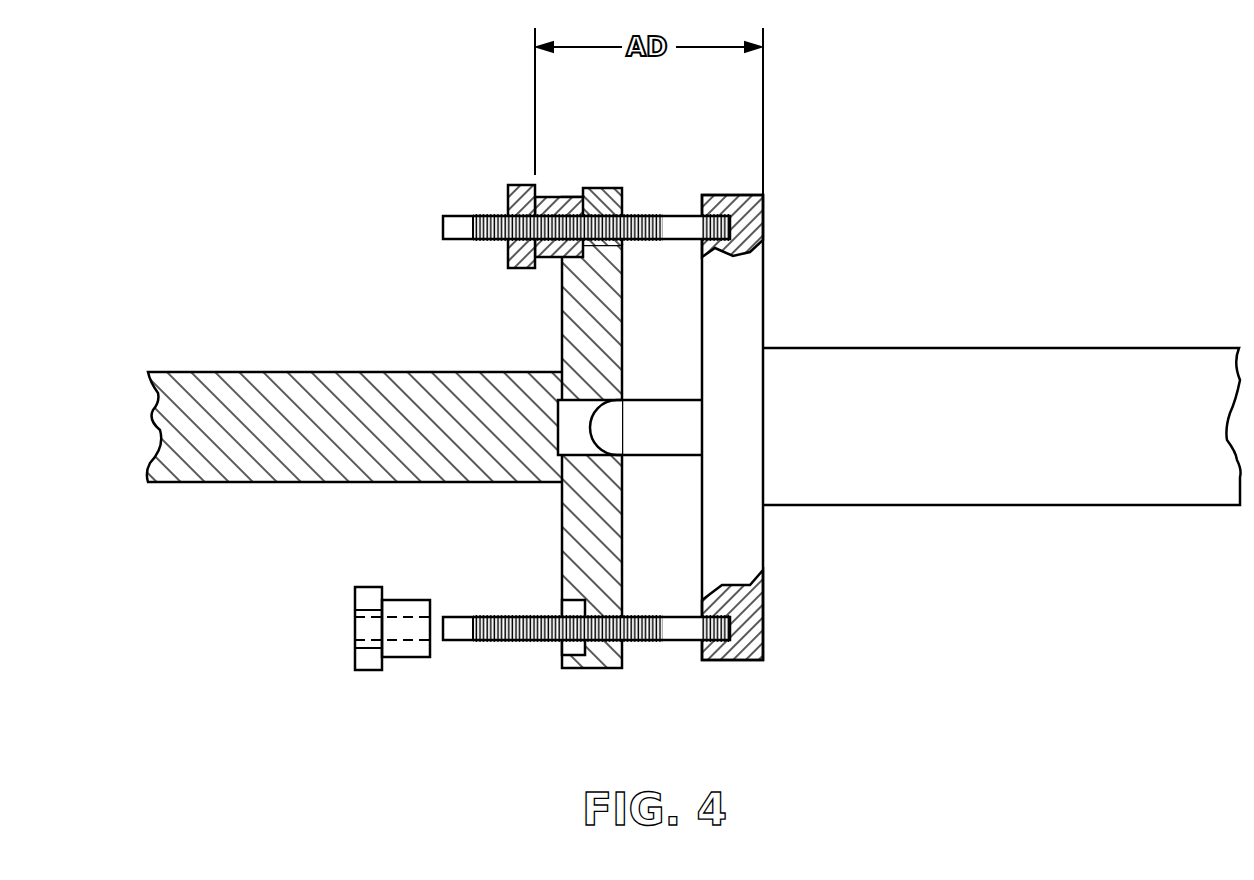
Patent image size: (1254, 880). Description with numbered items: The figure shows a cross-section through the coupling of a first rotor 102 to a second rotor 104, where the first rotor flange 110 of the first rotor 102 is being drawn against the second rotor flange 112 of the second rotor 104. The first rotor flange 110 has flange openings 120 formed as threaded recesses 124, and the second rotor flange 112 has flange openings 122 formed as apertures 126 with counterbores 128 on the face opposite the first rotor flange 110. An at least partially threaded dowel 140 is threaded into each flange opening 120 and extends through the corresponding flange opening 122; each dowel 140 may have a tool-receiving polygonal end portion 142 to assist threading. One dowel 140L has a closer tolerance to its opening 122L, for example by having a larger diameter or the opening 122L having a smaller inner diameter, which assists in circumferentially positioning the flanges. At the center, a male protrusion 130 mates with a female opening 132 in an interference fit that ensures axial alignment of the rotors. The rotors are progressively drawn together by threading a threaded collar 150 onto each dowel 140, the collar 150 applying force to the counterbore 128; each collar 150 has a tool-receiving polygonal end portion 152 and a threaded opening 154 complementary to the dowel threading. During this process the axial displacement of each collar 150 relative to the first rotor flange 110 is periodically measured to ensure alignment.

The first rotor 102 is at (924, 335).
The second rotor 104 is at (268, 492).
The first rotor flange 110 is at (750, 282).
The second rotor flange 112 is at (563, 512).
The flange openings 120 is at (722, 195).
The flange openings 122 is at (603, 243).
The opening 122L is at (586, 656).
The threaded recesses 124 is at (735, 226).
The apertures 126 is at (615, 188).
The counterbores 128 is at (562, 188).
The male protrusion 130 is at (665, 442).
The female opening 132 is at (557, 428).
The dowel 140 is at (490, 241).
The dowel 140L is at (678, 643).
The tool-receiving polygonal end portion 142 is at (458, 222).
The threaded collar 150 is at (436, 452).
The tool-receiving polygonal end portion 152 is at (368, 587).
The threaded opening 154 is at (404, 646).